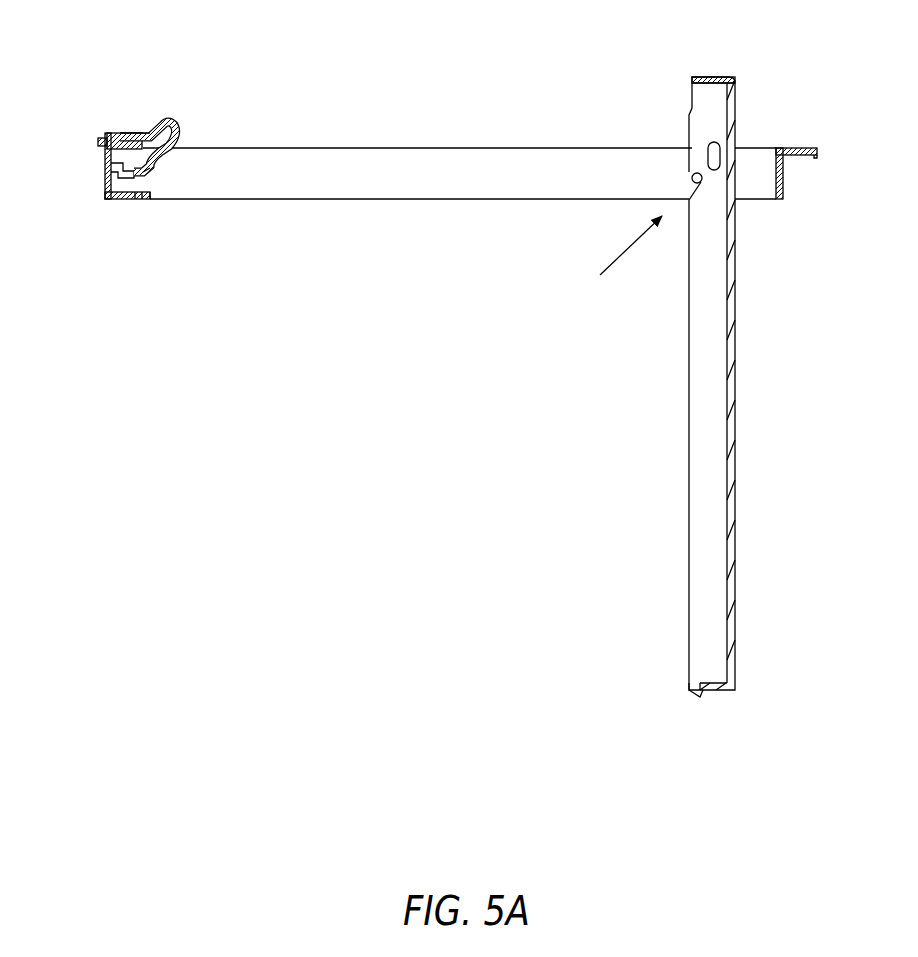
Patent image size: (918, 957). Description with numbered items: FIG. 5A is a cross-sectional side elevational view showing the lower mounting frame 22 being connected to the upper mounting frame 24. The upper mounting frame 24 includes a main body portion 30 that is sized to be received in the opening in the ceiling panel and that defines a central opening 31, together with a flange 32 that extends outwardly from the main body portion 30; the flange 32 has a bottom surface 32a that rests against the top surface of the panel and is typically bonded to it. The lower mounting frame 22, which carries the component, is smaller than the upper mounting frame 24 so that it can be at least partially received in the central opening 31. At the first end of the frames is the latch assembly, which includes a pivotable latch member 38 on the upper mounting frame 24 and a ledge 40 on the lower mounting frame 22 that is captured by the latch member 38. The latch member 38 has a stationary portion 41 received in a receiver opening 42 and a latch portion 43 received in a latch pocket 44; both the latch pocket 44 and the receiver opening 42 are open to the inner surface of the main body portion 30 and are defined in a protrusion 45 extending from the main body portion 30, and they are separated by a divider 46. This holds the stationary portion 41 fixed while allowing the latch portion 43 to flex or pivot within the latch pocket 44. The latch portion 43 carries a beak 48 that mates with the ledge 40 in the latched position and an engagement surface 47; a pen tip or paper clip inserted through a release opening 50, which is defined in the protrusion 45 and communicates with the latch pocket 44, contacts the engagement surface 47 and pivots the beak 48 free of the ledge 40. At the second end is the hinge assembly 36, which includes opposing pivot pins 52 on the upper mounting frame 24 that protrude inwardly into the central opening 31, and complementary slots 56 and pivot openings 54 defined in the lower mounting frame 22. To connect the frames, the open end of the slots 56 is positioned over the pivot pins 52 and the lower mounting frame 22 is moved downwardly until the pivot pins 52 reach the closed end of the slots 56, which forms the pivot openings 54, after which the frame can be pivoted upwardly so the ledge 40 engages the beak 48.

The lower mounting frame 22 is at (736, 383).
The upper mounting frame 24 is at (830, 140).
The main body portion 30 is at (787, 176).
The central opening 31 is at (432, 162).
The flange 32 is at (816, 148).
The bottom surface 32a is at (802, 158).
The hinge assembly 36 is at (668, 106).
The latch member 38 is at (170, 127).
The ledge 40 is at (704, 697).
The stationary portion 41 is at (99, 142).
The receiver opening 42 is at (125, 134).
The latch portion 43 is at (107, 167).
The latch pocket 44 is at (150, 185).
The protrusion 45 is at (109, 189).
The divider 46 is at (129, 139).
The engagement surface 47 is at (131, 200).
The beak 48 is at (160, 169).
The release opening 50 is at (139, 205).
The pivot pin 52 is at (690, 178).
The pivot opening 54 is at (712, 148).
The slot 56 is at (715, 178).